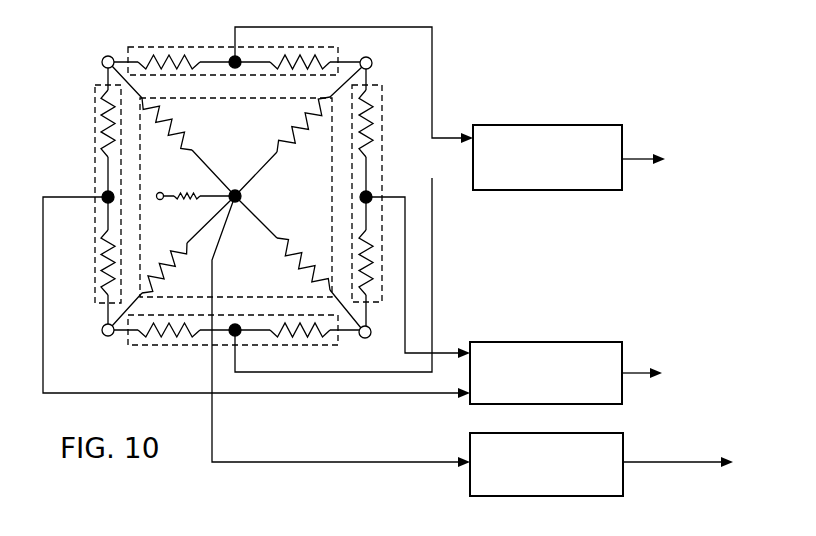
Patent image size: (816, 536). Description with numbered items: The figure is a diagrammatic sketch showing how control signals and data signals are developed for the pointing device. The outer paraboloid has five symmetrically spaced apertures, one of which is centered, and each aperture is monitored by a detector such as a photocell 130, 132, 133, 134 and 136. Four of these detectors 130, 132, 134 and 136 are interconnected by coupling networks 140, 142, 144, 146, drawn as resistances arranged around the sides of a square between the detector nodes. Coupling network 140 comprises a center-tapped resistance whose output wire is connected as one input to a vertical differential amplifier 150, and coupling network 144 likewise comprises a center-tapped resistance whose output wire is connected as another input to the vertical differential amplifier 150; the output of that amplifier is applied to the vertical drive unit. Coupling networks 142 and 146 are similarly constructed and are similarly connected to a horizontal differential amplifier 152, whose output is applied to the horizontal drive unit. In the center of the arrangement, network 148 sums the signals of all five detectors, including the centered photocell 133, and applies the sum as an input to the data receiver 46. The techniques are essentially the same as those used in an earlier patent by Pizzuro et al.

The photocell 130 is at (102, 57).
The photocell 132 is at (371, 58).
The photocell 134 is at (369, 339).
The photocell 136 is at (104, 337).
The photocell 133 is at (162, 192).
The coupling network 140 is at (181, 46).
The coupling network 142 is at (383, 108).
The coupling network 144 is at (152, 347).
The coupling network 146 is at (94, 122).
The network 148 is at (217, 98).
The vertical differential amplifier 150 is at (532, 124).
The horizontal differential amplifier 152 is at (538, 341).
The data receiver 46 is at (625, 446).